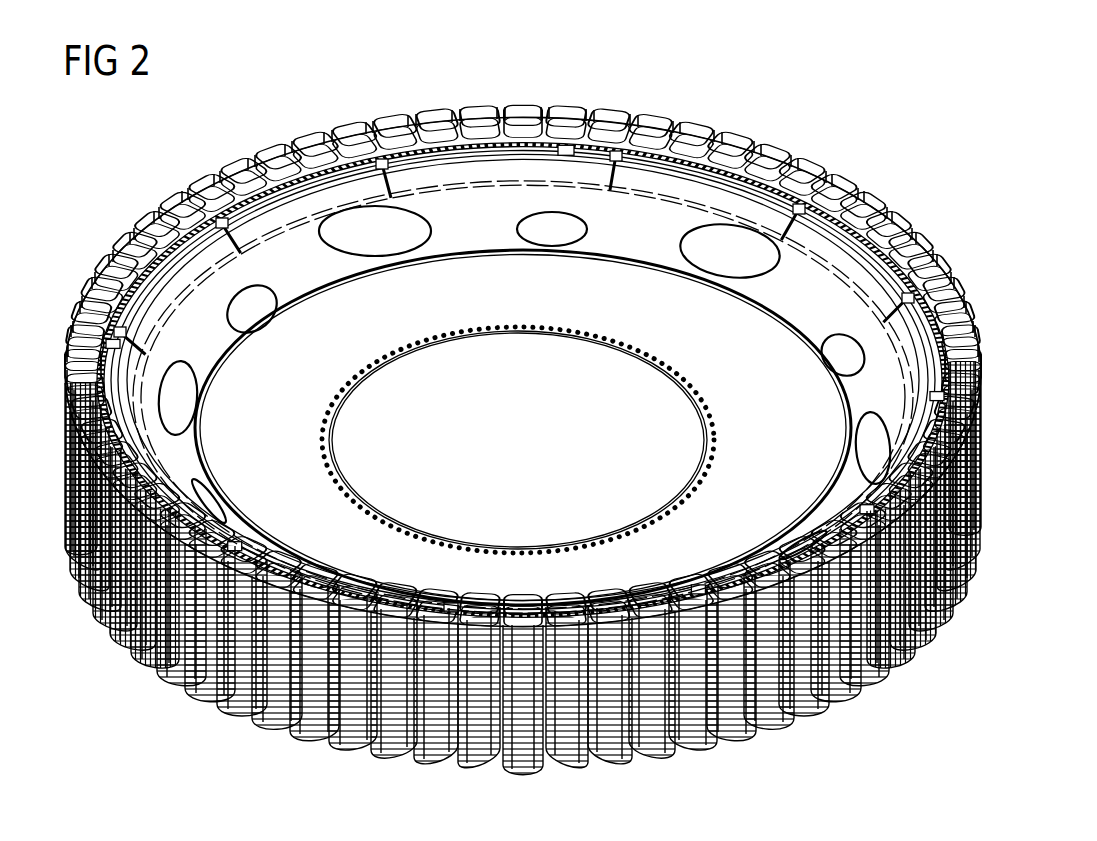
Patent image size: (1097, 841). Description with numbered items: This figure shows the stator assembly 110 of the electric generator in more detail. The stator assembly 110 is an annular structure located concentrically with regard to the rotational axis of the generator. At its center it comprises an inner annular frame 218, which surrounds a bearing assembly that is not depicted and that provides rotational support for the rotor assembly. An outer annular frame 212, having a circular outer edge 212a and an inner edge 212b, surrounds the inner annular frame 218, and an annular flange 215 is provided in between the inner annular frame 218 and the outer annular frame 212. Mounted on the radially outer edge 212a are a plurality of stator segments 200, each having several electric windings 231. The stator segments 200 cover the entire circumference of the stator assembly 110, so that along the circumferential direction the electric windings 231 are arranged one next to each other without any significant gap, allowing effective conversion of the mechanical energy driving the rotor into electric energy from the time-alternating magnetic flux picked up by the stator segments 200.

The stator assembly 110 is at (845, 141).
The stator segments 200 is at (897, 636).
The outer annular frame 212 is at (480, 215).
The circular outer edge 212a is at (250, 200).
The inner edge 212b is at (742, 293).
The annular flange 215 is at (758, 302).
The inner annular frame 218 is at (676, 500).
The electric windings 231 is at (780, 150).